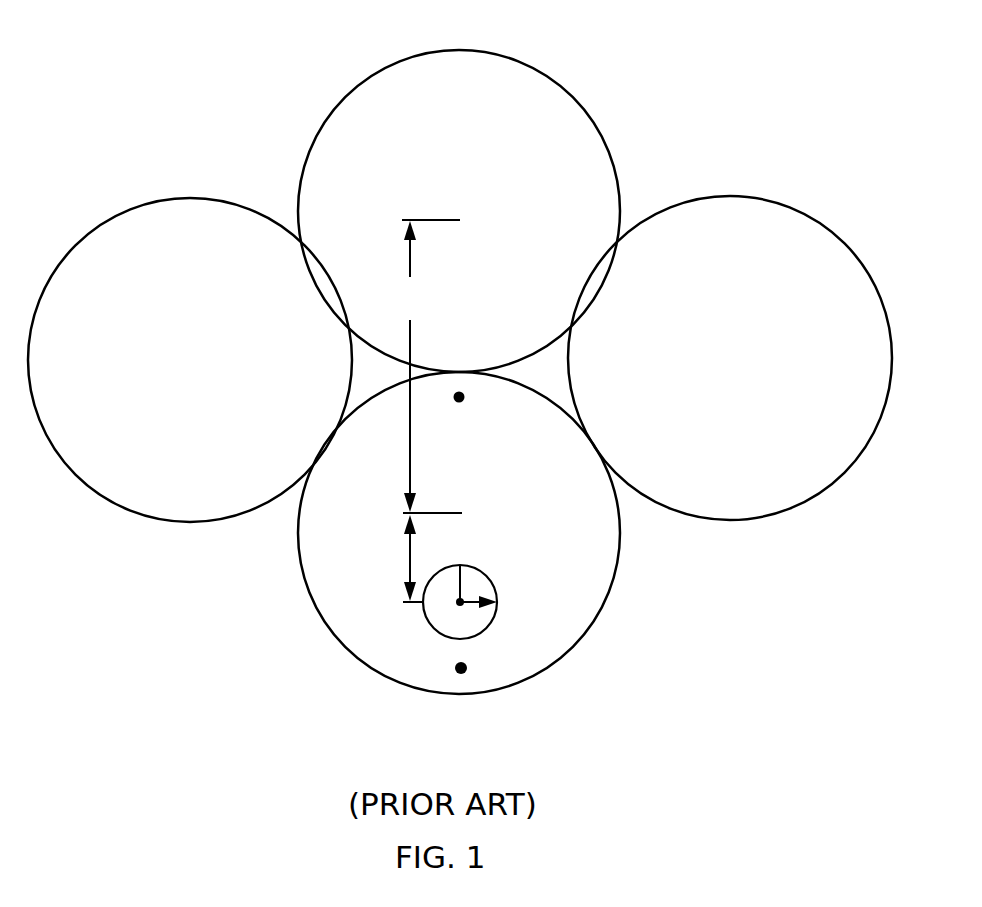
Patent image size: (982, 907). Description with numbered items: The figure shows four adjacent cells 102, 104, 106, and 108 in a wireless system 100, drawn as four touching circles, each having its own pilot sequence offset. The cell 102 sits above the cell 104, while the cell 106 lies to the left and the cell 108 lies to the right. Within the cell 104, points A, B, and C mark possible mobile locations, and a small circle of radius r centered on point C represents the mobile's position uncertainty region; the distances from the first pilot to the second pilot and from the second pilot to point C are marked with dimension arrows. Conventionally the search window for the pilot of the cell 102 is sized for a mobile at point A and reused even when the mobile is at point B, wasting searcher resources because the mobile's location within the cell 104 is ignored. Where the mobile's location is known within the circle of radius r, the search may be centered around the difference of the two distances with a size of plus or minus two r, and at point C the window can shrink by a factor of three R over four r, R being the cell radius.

The wireless system 100 is at (170, 66).
The cell 102 is at (463, 50).
The cell 104 is at (553, 658).
The cell 106 is at (90, 236).
The cell 108 is at (837, 233).